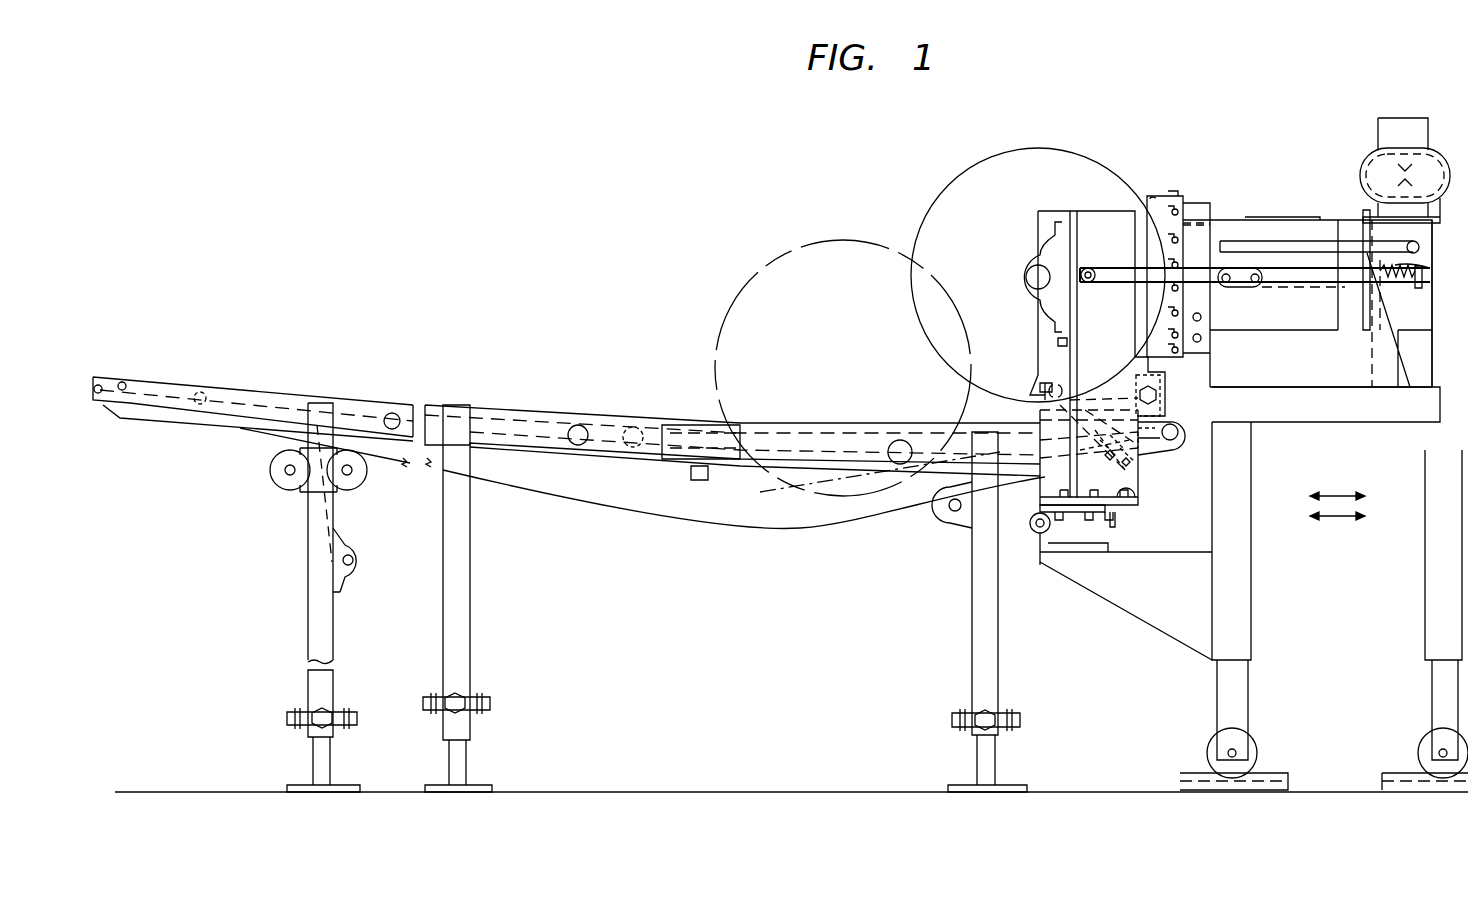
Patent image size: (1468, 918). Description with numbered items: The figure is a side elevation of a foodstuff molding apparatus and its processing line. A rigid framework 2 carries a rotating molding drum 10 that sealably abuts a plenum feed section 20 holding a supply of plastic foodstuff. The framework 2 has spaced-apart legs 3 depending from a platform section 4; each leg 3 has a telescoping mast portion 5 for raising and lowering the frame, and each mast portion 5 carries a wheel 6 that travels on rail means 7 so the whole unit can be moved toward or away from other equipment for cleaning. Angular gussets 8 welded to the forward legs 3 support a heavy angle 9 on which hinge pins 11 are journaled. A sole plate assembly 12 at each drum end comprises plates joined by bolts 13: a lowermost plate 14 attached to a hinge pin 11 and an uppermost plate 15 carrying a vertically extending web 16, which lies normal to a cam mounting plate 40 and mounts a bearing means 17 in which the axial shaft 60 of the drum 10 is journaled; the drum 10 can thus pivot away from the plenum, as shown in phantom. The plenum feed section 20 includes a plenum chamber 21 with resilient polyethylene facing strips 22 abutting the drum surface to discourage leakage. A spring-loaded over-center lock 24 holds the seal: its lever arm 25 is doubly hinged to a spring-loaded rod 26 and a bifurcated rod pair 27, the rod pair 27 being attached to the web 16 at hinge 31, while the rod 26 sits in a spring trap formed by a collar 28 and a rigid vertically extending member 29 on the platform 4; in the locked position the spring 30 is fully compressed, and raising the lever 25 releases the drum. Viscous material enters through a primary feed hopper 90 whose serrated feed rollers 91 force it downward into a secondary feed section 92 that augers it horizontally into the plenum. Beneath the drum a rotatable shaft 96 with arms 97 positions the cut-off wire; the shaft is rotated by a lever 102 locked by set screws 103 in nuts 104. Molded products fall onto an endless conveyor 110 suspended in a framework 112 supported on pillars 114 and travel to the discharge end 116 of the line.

The rigid framework 2 is at (1253, 470).
The legs 3 is at (1252, 590).
The platform section 4 is at (1418, 387).
The telescoping mast portion 5 is at (1242, 700).
The wheel 6 is at (1252, 748).
The rail means 7 is at (1266, 774).
The angular gussets 8 is at (1113, 598).
The heavy angle 9 is at (1040, 548).
The molding drum 10 is at (977, 160).
The hinge pins 11 is at (1034, 530).
The sole plate assembly 12 is at (1040, 497).
The bolts 13 is at (1135, 511).
The lowermost plate 14 is at (1077, 517).
The uppermost plate 15 is at (1138, 489).
The vertically extending member (web) 16 is at (1079, 353).
The bearing means 17 is at (1032, 262).
The plenum feed section 20 is at (1228, 218).
The plenum chamber 21 is at (1162, 196).
The facing strips 22 is at (1147, 200).
The over-center lock 24 is at (1232, 287).
The lever arm 25 is at (1303, 248).
The spring-loaded rod 26 is at (1316, 284).
The bifurcated rod pair 27 is at (1118, 284).
The nut or collar 28 is at (1425, 270).
The rigid vertically extending member 29 is at (1362, 364).
The spring 30 is at (1392, 284).
The hinge 31 is at (1090, 268).
The cam mounting plate 40 is at (1056, 341).
The axial shaft 60 is at (1036, 282).
The primary feed hopper 90 is at (1373, 151).
The serrated feed rollers 91 is at (1378, 170).
The secondary feed section 92 is at (1410, 330).
The rotatable shaft 96 is at (1162, 398).
The arms 97 is at (1119, 421).
The lever 102 is at (1133, 360).
The set screws 103 is at (1148, 466).
The nuts 104 is at (1105, 460).
The processing belt or conveyor 110 is at (690, 424).
The framework 112 is at (468, 404).
The standards or pillars 114 is at (443, 633).
The discharge end 116 is at (142, 364).